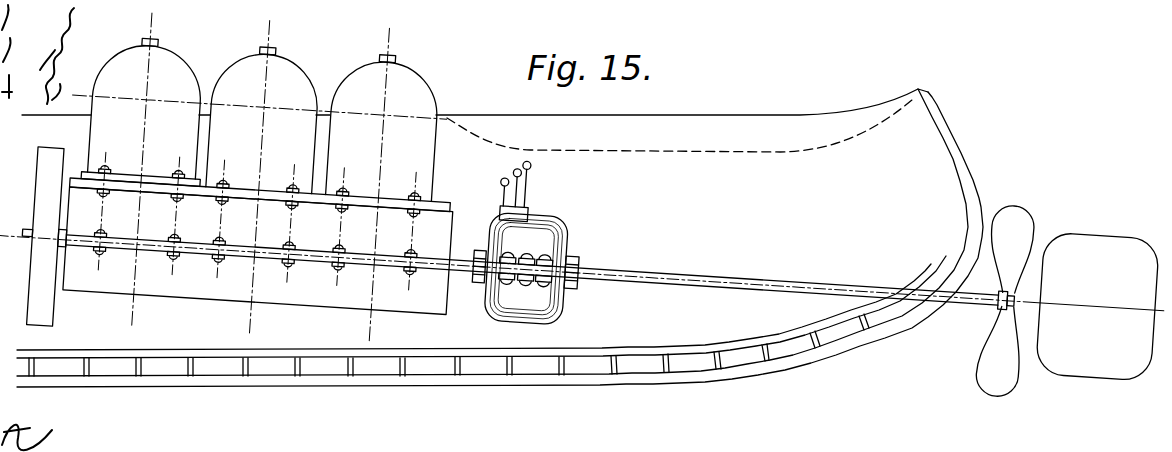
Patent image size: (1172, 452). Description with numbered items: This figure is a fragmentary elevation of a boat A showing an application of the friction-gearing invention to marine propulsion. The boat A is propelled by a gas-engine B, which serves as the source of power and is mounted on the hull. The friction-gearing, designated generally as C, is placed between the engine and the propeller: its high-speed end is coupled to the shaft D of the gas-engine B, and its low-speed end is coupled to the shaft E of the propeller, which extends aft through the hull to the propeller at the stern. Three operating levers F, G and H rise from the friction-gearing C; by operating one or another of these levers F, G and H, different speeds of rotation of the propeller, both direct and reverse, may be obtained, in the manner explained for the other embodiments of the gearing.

The boat A is at (957, 147).
The gas-engine B is at (243, 290).
The friction-gearing C is at (540, 265).
The shaft of the gas-engine D is at (465, 272).
The shaft of the propeller E is at (630, 283).
The lever F is at (502, 183).
The lever G is at (512, 192).
The lever H is at (529, 176).